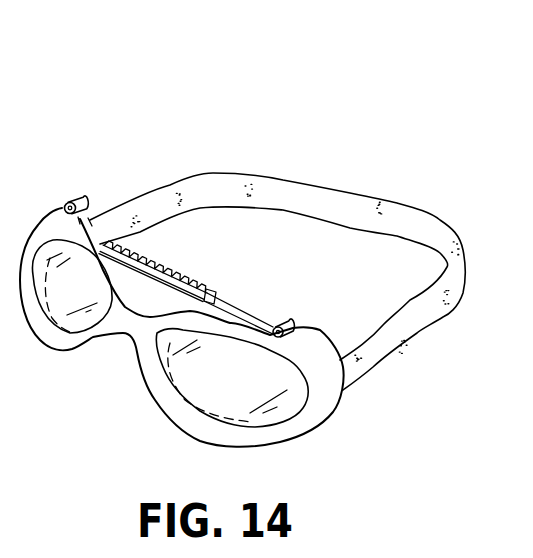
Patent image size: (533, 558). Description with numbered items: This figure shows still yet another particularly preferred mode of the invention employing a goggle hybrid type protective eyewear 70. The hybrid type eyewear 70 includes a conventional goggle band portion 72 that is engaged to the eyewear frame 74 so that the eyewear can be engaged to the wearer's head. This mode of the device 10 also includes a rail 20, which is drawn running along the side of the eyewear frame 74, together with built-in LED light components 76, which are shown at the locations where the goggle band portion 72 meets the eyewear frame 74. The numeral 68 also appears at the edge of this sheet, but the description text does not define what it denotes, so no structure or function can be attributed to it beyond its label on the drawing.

The device 10 is at (292, 83).
The rail 20 is at (193, 277).
The component shown in adjacent figure 68 is at (23, 0).
The goggle hybrid type protective eyewear 70 is at (41, 224).
The goggle band portion 72 is at (363, 192).
The eyewear frame 74 is at (310, 427).
The LED light components 76 is at (78, 197).